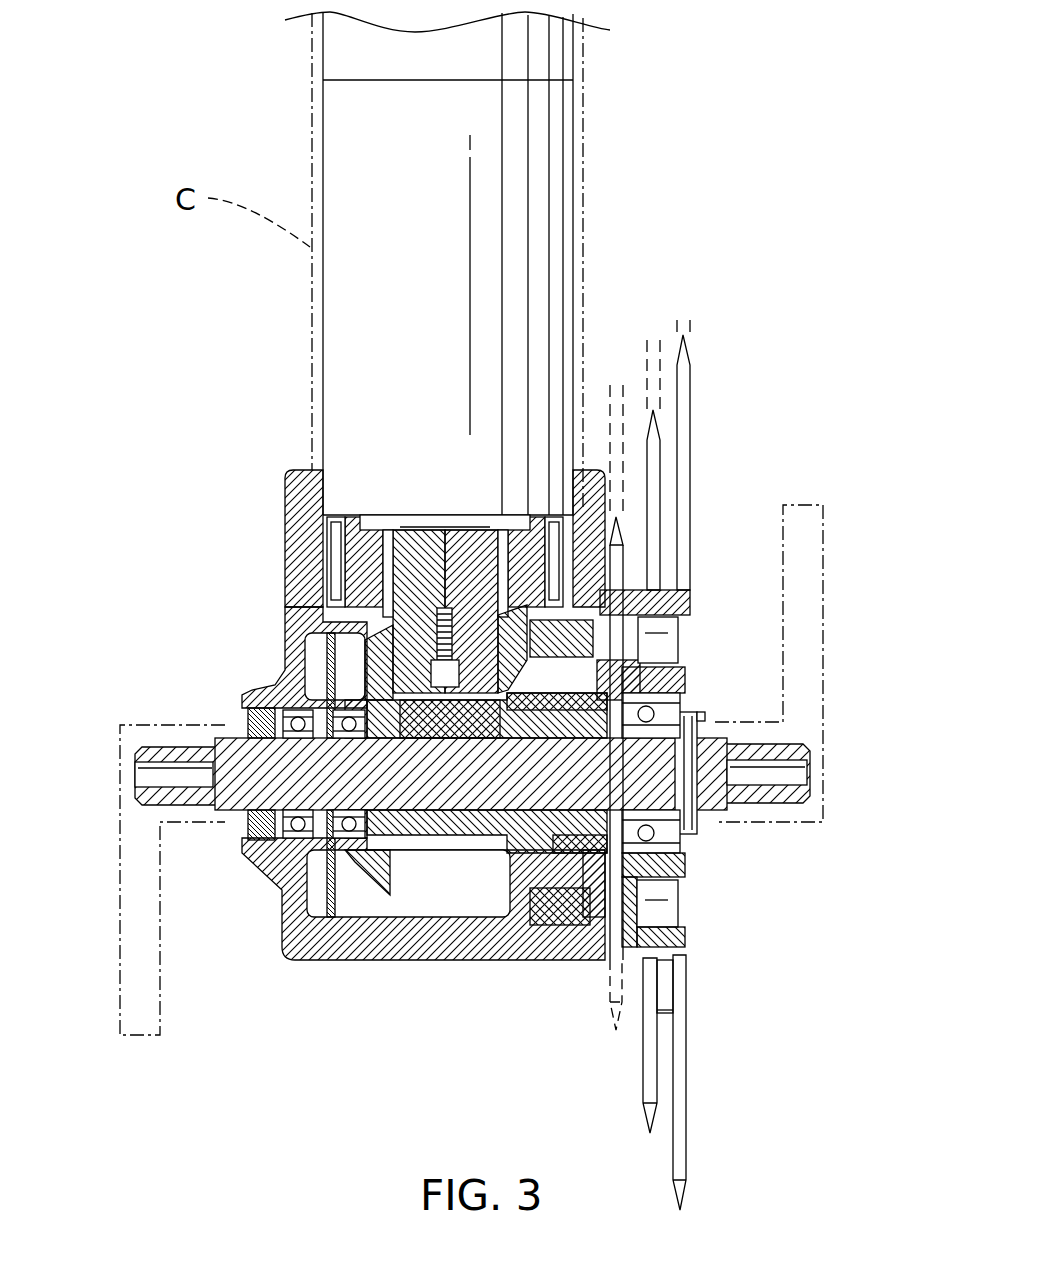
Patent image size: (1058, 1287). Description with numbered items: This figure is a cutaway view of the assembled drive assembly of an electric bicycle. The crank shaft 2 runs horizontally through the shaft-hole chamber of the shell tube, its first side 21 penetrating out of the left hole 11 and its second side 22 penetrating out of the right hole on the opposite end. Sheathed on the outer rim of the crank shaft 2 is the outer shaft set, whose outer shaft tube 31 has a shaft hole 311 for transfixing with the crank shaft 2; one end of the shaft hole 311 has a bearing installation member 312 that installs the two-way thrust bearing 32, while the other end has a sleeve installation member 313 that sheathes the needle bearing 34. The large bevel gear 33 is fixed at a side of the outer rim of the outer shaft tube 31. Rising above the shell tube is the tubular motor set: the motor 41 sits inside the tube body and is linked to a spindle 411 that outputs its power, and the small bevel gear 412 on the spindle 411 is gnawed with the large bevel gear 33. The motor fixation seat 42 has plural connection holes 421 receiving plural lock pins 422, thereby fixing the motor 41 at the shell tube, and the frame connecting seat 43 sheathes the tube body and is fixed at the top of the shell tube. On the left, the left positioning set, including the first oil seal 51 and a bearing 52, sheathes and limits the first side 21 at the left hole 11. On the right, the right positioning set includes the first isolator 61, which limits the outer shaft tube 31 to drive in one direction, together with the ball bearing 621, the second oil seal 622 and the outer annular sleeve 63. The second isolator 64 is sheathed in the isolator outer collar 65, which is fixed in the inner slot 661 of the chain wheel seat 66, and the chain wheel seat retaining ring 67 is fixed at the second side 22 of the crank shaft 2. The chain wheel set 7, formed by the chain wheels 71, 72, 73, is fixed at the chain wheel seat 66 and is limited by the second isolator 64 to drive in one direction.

The crank shaft 2 is at (278, 768).
The first side 21 is at (160, 800).
The second side 22 is at (713, 743).
The left hole 11 is at (262, 712).
The chain wheel set 7 is at (610, 340).
The chain wheel 71 is at (617, 395).
The chain wheel 72 is at (655, 342).
The chain wheel 73 is at (688, 322).
The outer shaft tube 31 is at (462, 835).
The shaft hole 311 is at (430, 835).
The bearing installation member 312 is at (338, 862).
The sleeve installation member 313 is at (578, 850).
The two-way thrust bearing 32 is at (392, 865).
The large bevel gear 33 is at (352, 872).
The needle bearing 34 is at (560, 853).
The motor 41 is at (340, 330).
The spindle 411 is at (390, 632).
The small bevel gear 412 is at (530, 615).
The motor fixation seat 42 is at (330, 578).
The connection holes 421 is at (330, 560).
The lock pins 422 is at (345, 545).
The frame connecting seat 43 is at (290, 470).
The first oil seal 51 is at (290, 862).
The bearing 52 is at (305, 842).
The first isolator 61 is at (500, 853).
The ball bearing 621 is at (575, 605).
The second oil seal 622 is at (560, 640).
The outer annular sleeve 63 is at (593, 855).
The second isolator 64 is at (670, 845).
The isolator outer collar 65 is at (653, 690).
The chain wheel seat 66 is at (687, 925).
The inner slot 661 is at (660, 680).
The chain wheel seat retaining ring 67 is at (700, 823).